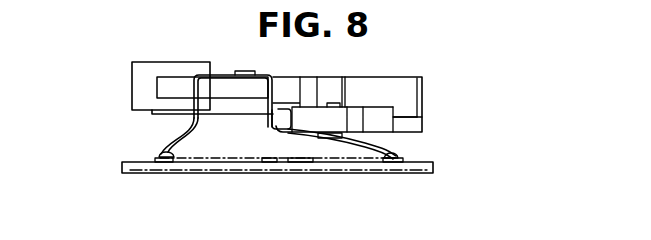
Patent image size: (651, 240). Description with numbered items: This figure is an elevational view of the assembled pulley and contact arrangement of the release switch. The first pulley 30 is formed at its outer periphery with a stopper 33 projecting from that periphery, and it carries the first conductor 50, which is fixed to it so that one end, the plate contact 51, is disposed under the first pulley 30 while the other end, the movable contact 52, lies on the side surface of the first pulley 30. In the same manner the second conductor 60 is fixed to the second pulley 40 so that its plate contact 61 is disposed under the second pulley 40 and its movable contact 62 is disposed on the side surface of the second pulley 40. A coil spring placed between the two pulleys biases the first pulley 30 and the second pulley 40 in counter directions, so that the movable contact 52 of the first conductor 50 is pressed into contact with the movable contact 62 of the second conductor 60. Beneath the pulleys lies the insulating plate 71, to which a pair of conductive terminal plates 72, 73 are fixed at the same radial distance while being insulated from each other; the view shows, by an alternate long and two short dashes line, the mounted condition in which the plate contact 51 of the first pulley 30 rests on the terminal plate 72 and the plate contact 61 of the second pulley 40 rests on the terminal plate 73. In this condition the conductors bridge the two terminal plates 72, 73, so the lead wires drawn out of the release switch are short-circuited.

The first pulley 30 is at (385, 77).
The stopper 33 is at (384, 117).
The second pulley 40 is at (165, 62).
The first conductor 50 is at (315, 133).
The plate contact 51 is at (391, 160).
The movable contact 52 is at (283, 131).
The second conductor 60 is at (222, 74).
The plate contact 61 is at (168, 157).
The movable contact 62 is at (276, 130).
The insulating plate 71 is at (434, 170).
The terminal plate 72 is at (405, 156).
The terminal plate 73 is at (152, 157).